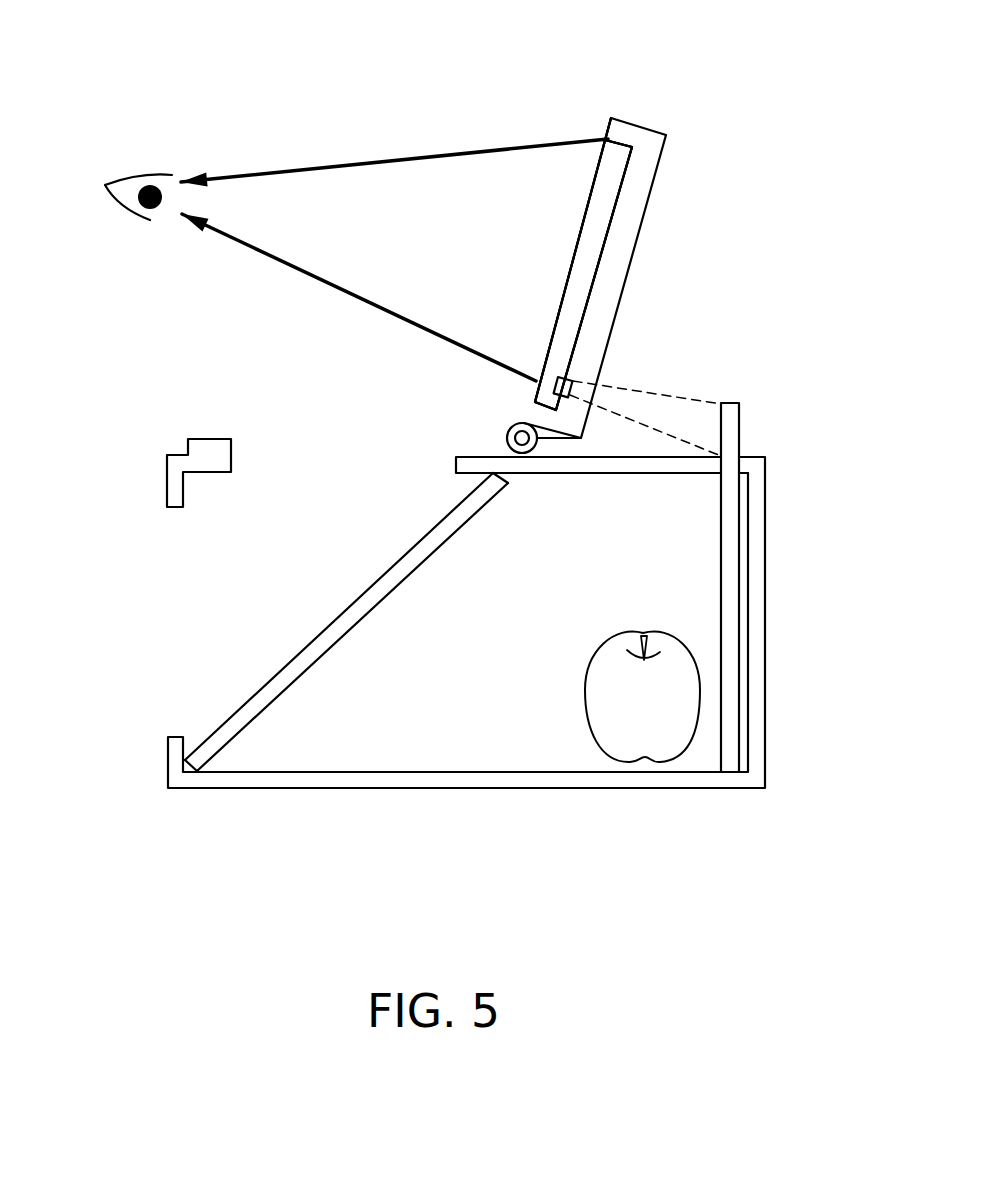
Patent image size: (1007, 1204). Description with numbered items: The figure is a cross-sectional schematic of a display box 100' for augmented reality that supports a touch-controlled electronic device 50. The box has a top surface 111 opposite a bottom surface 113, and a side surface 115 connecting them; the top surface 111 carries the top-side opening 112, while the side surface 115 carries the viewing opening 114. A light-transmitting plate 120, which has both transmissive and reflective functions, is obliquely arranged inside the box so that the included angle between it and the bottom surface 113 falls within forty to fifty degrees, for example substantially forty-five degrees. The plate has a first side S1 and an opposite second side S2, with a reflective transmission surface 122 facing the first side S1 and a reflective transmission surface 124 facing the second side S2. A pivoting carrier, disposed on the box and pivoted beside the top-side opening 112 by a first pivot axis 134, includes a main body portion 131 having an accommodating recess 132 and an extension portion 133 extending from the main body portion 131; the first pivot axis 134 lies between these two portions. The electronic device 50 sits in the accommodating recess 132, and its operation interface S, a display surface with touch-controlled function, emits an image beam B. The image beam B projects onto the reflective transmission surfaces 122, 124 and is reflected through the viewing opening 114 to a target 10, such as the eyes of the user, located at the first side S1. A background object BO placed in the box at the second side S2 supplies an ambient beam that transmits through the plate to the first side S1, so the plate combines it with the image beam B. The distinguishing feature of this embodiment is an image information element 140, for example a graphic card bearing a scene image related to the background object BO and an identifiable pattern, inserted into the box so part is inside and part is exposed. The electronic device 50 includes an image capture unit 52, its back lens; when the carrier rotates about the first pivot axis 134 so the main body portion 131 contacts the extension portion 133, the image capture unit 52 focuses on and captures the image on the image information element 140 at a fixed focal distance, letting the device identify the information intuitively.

The target 10 is at (131, 185).
The image beam B is at (272, 172).
The electronic device 50 is at (588, 263).
The operation interface S is at (543, 315).
The image capture unit 52 is at (573, 377).
The display box 100' is at (809, 858).
The top surface 111 is at (676, 465).
The top-side opening 112 is at (333, 453).
The bottom surface 113 is at (560, 780).
The viewing opening 114 is at (173, 584).
The side surface 115 is at (175, 487).
The light-transmitting plate 120 is at (346, 661).
The reflective transmission surface 122 is at (293, 641).
The reflective transmission surface 124 is at (293, 690).
The main body portion 131 is at (637, 195).
The accommodating recess 132 is at (567, 177).
The extension portion 133 is at (562, 448).
The first pivot axis 134 is at (507, 438).
The image information element 140 is at (730, 437).
The first side S1 is at (203, 711).
The second side S2 is at (397, 735).
The background object BO is at (603, 680).